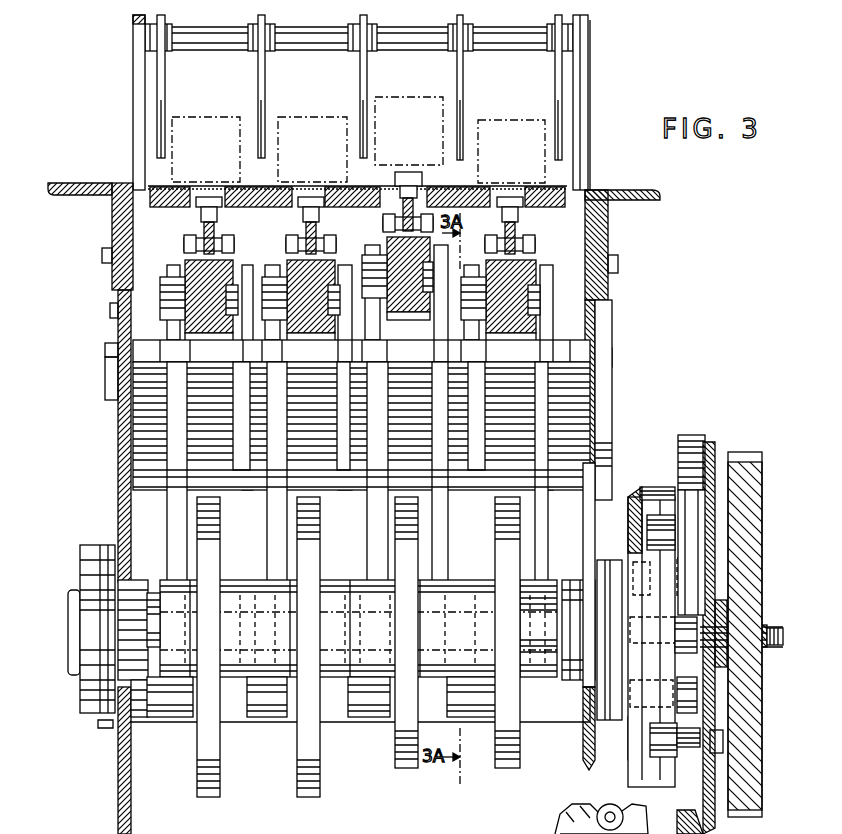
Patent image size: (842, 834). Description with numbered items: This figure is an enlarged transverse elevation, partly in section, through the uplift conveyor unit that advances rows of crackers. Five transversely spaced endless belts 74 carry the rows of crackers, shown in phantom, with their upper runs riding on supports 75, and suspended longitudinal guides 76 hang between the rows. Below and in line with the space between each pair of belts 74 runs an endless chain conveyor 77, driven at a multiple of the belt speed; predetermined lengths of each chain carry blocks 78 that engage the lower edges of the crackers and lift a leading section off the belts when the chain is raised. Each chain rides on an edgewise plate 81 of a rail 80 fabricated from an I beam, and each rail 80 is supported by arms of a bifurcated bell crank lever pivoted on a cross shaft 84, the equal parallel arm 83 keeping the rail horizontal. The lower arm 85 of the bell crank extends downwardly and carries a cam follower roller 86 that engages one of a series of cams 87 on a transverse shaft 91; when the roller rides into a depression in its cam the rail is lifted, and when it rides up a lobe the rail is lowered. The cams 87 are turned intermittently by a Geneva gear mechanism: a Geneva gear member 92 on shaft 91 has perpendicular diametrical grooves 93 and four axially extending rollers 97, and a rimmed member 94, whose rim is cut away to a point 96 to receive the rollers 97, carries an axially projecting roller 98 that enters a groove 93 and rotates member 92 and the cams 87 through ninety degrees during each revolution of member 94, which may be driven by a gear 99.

The conveyor belts 74 is at (172, 183).
The supports 75 is at (133, 180).
The suspended longitudinal guides 76 is at (463, 113).
The endless chain conveyor 77 is at (572, 186).
The blocks 78 is at (207, 200).
The rail 80 is at (197, 258).
The edgewise plate 81 is at (197, 232).
The parallel arm 83 is at (540, 353).
The cross shaft 84 is at (132, 427).
The lower arm 85 is at (542, 545).
The cam follower roller 86 is at (207, 653).
The cams 87 is at (197, 770).
The transverse shaft 91 is at (72, 633).
The Geneva gear member 92 is at (658, 487).
The diametrical grooves 93 is at (662, 540).
The rimmed member 94 is at (713, 447).
The point 96 is at (690, 683).
The axially extending rollers 97 is at (720, 560).
The axially projecting roller 98 is at (630, 773).
The gear 99 is at (750, 800).